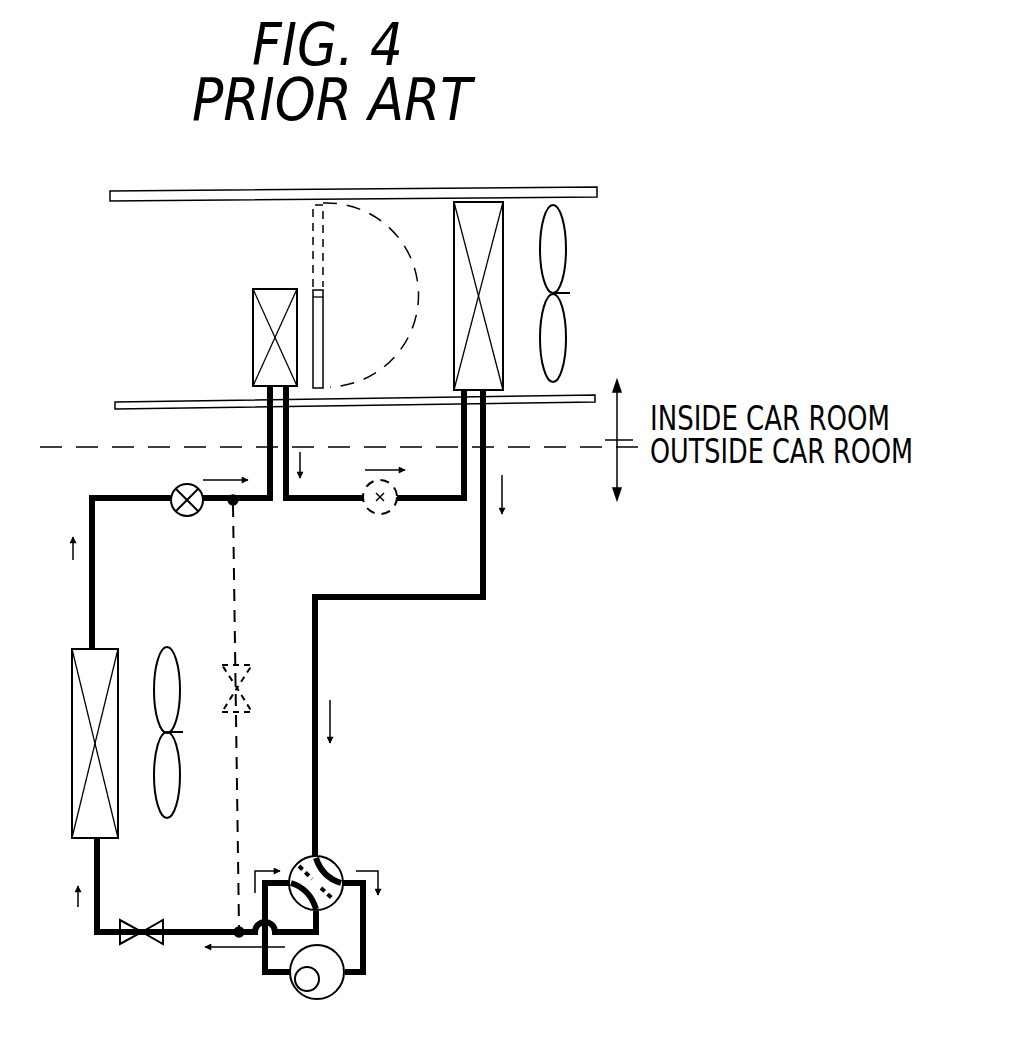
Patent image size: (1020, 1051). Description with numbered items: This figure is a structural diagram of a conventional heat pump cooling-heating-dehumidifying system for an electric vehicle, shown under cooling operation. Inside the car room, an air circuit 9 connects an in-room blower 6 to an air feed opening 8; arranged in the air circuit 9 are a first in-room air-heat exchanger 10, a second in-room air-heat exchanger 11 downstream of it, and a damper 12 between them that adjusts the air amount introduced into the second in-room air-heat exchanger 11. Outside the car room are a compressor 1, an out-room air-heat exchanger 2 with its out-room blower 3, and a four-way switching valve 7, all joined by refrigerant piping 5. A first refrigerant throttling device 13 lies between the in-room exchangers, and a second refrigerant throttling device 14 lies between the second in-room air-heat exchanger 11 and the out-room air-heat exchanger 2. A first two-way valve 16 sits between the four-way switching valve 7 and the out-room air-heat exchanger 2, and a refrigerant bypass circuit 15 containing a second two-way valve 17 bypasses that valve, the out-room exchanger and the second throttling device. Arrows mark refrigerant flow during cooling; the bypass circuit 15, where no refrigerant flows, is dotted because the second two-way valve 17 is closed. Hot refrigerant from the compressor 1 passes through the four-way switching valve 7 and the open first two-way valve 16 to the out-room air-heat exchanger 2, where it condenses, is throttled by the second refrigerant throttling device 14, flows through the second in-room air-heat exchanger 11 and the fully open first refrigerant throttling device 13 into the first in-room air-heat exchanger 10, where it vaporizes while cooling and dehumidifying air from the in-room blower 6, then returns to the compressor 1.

The compressor 1 is at (340, 992).
The out-room air-heat exchanger 2 is at (120, 818).
The out-room blower 3 is at (170, 652).
The refrigerant piping 5 is at (250, 503).
The in-room blower 6 is at (565, 253).
The four-way switching valve 7 is at (337, 862).
The air feed opening 8 is at (98, 232).
The air circuit 9 is at (146, 400).
The first in-room air-heat exchanger 10 is at (475, 202).
The second in-room air-heat exchanger 11 is at (253, 320).
The damper 12 is at (313, 240).
The first refrigerant throttling device 13 is at (395, 510).
The second refrigerant throttling device 14 is at (175, 515).
The refrigerant bypass circuit 15 is at (237, 603).
The first two-way valve 16 is at (150, 945).
The second two-way valve 17 is at (243, 686).